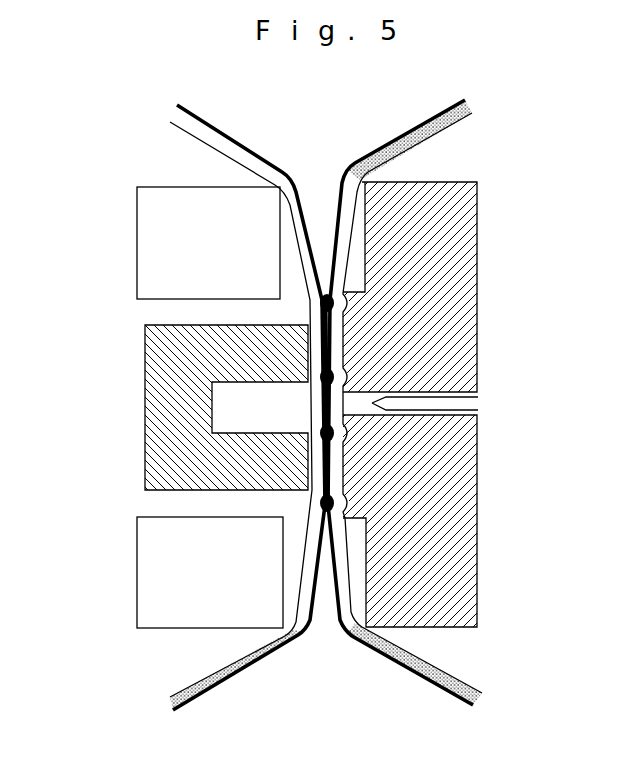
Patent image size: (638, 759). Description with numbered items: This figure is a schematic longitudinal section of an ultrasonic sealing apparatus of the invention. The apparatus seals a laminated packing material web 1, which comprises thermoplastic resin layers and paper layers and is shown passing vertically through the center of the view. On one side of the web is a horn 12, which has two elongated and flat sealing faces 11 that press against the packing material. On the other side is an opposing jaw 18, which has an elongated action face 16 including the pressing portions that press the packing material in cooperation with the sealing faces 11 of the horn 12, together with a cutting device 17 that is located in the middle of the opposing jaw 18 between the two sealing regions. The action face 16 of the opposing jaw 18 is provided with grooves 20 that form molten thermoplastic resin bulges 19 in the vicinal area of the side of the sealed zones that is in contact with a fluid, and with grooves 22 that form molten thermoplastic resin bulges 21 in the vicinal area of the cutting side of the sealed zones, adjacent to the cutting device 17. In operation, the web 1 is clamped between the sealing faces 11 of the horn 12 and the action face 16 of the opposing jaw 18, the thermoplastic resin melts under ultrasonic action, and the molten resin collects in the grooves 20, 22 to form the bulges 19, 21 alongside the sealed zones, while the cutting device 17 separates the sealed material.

The laminated packing material web 1 is at (425, 120).
The sealing faces 11 is at (322, 455).
The horn 12 is at (178, 407).
The action face 16 is at (348, 328).
The cutting device 17 is at (482, 405).
The opposing jaw 18 is at (467, 404).
The molten thermoplastic resin bulges 19 is at (326, 515).
The grooves 20 is at (345, 514).
The molten thermoplastic resin bulges 21 is at (323, 377).
The grooves 22 is at (342, 377).